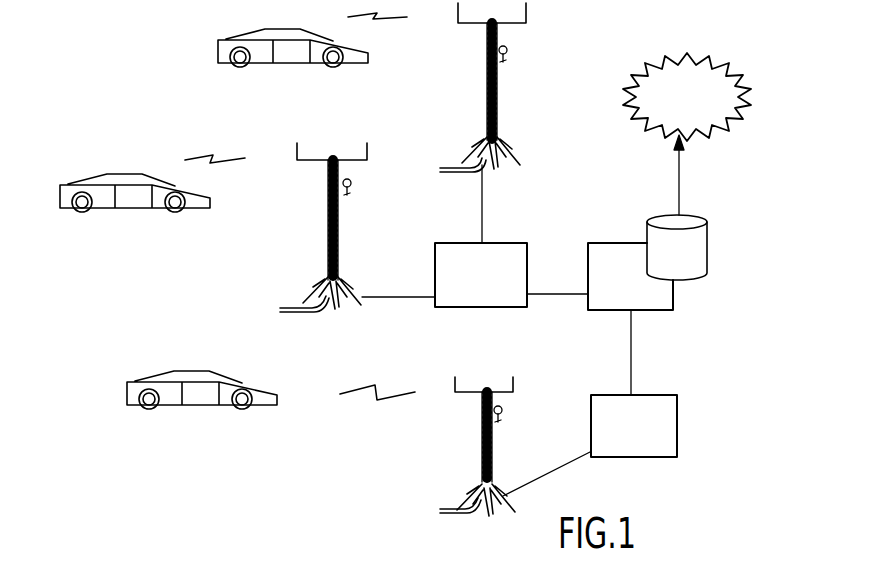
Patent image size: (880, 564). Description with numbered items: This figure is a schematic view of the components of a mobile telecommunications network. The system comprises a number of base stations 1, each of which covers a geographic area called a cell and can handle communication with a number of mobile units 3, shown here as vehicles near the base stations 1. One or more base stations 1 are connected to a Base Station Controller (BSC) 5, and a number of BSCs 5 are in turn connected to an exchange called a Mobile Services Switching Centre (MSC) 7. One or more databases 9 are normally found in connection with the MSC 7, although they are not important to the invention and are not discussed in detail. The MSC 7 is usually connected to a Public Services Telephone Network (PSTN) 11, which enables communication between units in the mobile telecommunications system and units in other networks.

The base station 1 is at (497, 98).
The mobile unit 3 is at (302, 64).
The Base Station Controller (BSC) 5 is at (480, 311).
The Mobile Services Switching Centre (MSC) 7 is at (653, 318).
The database 9 is at (708, 257).
The Public Services Telephone Network (PSTN) 11 is at (717, 133).